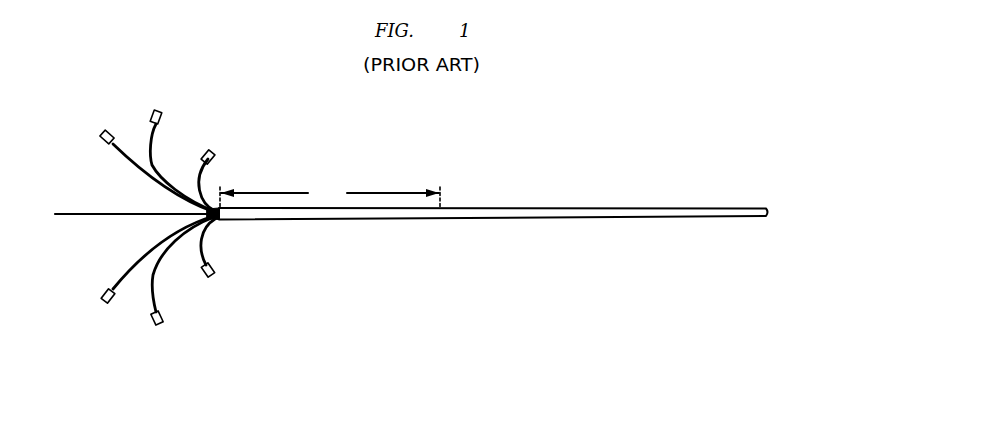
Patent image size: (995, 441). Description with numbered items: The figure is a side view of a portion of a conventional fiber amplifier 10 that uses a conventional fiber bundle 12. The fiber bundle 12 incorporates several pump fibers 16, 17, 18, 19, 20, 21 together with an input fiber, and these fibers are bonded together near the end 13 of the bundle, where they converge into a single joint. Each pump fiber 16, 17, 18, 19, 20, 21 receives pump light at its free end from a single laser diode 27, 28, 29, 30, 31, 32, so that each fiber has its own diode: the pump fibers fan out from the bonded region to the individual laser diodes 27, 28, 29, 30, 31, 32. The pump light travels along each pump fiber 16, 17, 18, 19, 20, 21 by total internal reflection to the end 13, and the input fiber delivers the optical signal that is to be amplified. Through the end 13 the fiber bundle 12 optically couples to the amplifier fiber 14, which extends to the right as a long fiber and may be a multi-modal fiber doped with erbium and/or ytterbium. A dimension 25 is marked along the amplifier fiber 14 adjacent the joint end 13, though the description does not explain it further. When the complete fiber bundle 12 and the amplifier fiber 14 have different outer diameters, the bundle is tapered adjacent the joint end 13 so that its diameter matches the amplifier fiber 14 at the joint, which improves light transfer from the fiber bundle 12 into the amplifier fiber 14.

The fiber amplifier 10 is at (555, 313).
The fiber bundle 12 is at (314, 262).
The end 13 is at (440, 220).
The amplifier fiber 14 is at (522, 206).
The pump fiber 16 is at (203, 244).
The pump fiber 17 is at (157, 271).
The pump fiber 18 is at (136, 258).
The pump fiber 19 is at (132, 172).
The pump fiber 20 is at (155, 160).
The pump fiber 21 is at (203, 183).
The length 25 is at (329, 195).
The laser diode 27 is at (213, 278).
The laser diode 28 is at (162, 323).
The laser diode 29 is at (104, 292).
The laser diode 30 is at (99, 139).
The laser diode 31 is at (161, 117).
The laser diode 32 is at (213, 151).